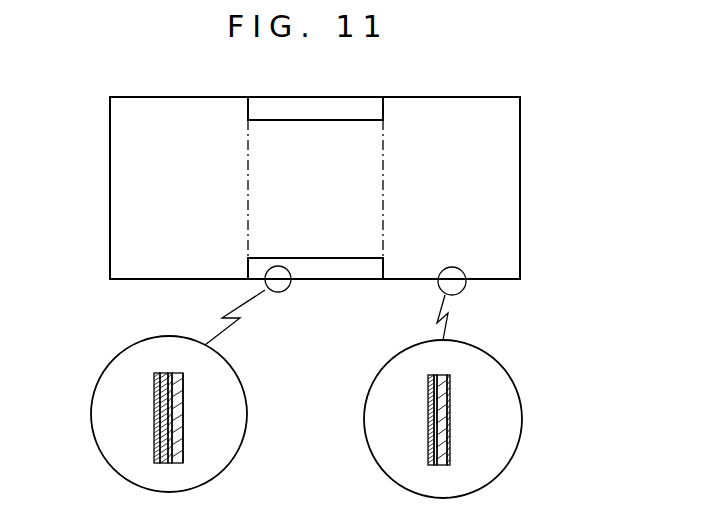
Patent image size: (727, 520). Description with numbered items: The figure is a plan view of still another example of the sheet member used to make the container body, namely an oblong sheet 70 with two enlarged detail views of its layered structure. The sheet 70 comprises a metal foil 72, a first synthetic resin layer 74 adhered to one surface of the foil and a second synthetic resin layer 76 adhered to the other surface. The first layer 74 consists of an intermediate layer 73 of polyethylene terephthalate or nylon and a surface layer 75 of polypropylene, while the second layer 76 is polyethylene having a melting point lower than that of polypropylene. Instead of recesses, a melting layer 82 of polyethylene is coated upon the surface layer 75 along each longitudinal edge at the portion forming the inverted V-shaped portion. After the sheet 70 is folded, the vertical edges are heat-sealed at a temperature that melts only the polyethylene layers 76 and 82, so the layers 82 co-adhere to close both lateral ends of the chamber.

The sheet 70 is at (538, 143).
The melting layer 82 is at (353, 106).
The second synthetic resin layer 76 is at (183, 405).
The surface layer 75 is at (156, 410).
The intermediate layer 73 is at (154, 445).
The metal foil 72 is at (183, 437).
The first synthetic resin layer 74 is at (323, 443).